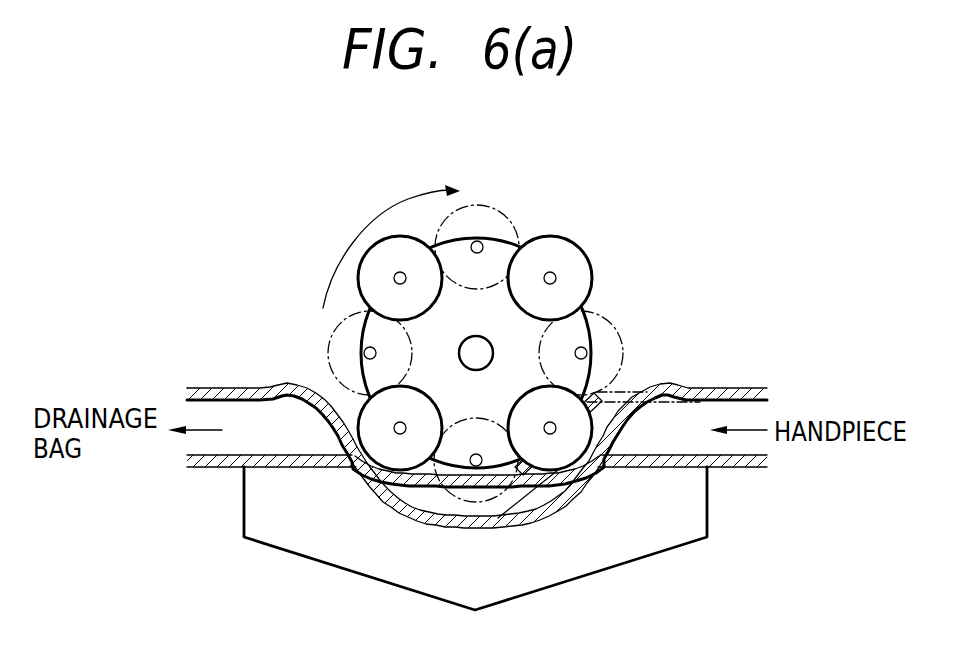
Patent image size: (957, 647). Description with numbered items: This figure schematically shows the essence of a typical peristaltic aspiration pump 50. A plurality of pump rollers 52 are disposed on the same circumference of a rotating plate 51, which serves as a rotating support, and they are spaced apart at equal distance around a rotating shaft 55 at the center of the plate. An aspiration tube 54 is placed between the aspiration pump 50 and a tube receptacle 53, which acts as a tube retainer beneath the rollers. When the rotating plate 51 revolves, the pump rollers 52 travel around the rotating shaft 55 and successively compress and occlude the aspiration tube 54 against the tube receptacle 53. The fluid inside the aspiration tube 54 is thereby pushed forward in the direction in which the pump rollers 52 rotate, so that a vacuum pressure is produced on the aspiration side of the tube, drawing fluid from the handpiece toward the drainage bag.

The aspiration pump 50 is at (466, 325).
The rotating plate 51 is at (425, 357).
The pump rollers 52 is at (568, 252).
The tube receptacle 53 is at (258, 517).
The aspiration tube 54 is at (757, 388).
The rotating shaft 55 is at (478, 338).